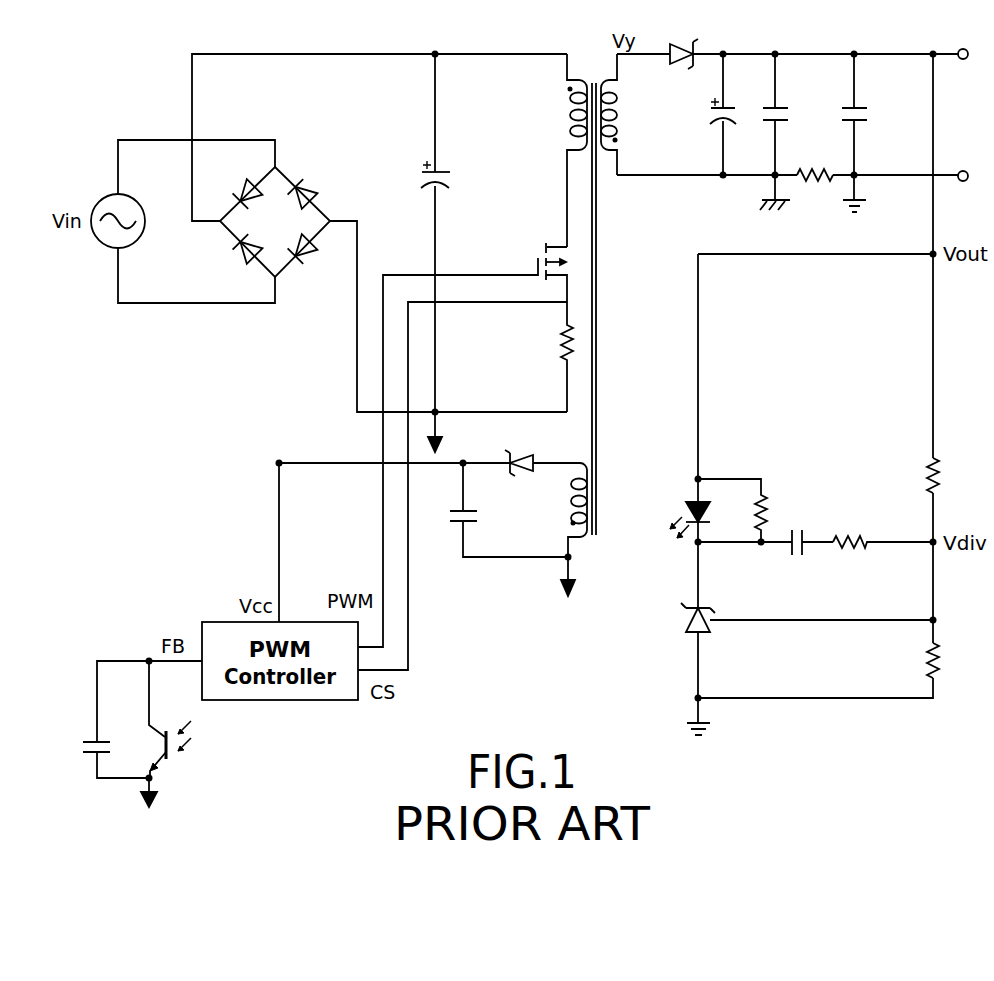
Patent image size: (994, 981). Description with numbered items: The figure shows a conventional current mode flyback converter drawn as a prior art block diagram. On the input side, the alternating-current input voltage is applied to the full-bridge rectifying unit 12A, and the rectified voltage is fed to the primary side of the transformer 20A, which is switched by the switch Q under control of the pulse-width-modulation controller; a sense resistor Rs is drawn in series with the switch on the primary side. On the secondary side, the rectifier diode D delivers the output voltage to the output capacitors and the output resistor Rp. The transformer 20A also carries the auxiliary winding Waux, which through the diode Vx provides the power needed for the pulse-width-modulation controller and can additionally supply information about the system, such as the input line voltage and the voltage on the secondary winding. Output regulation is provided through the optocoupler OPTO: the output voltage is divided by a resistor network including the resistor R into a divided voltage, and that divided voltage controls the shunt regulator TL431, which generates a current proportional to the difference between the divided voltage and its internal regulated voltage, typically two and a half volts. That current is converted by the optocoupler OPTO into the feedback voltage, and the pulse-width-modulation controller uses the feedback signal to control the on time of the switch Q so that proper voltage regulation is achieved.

The full-bridge rectifying unit 12A is at (292, 170).
The transformer 20A is at (547, 290).
The auxiliary winding Waux is at (551, 510).
The current sense resistor Rs is at (551, 357).
The auxiliary rectifier diode Vx is at (538, 459).
The output rectifier diode D is at (684, 45).
The output resistor Rp is at (815, 105).
The divider resistor R is at (921, 475).
The optocoupler OPTO is at (666, 517).
The shunt regulator TL431 is at (729, 613).